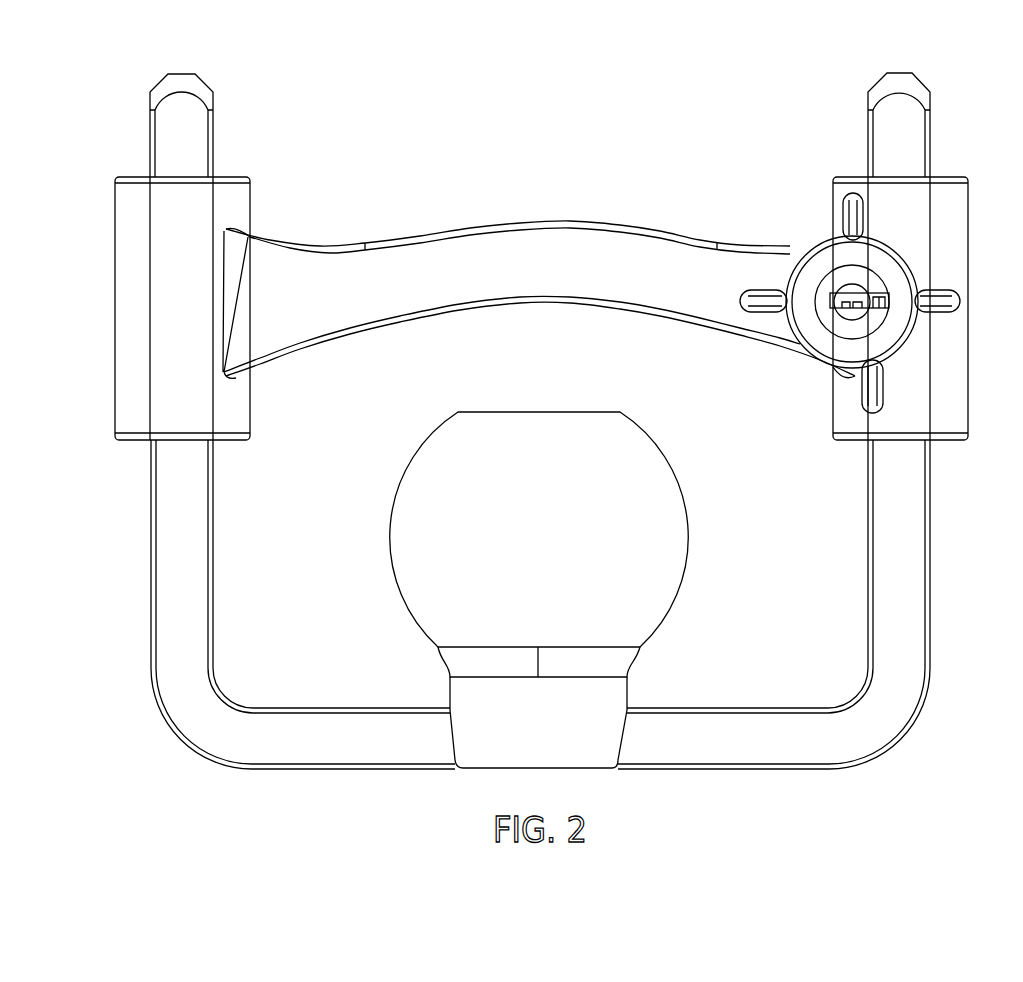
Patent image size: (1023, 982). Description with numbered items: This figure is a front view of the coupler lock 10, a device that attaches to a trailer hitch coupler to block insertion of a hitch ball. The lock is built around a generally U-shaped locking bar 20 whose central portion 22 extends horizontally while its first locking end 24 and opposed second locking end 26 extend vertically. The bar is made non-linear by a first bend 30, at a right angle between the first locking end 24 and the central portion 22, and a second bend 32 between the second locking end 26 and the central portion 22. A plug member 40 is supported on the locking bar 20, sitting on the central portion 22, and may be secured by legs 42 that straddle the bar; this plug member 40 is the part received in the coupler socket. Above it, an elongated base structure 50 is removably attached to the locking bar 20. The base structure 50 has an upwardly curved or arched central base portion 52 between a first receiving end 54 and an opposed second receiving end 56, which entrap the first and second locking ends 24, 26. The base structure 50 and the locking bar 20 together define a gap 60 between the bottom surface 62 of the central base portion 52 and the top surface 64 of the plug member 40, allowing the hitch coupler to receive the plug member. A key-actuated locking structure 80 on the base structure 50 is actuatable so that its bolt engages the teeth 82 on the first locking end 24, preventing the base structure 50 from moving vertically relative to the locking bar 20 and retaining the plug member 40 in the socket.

The coupler lock 10 is at (118, 115).
The locking bar 20 is at (149, 606).
The central portion 22 is at (725, 764).
The first locking end 24 is at (915, 87).
The second locking end 26 is at (200, 90).
The first bend 30 is at (888, 748).
The second bend 32 is at (194, 750).
The plug member 40 is at (382, 497).
The legs 42 is at (616, 747).
The base structure 50 is at (539, 261).
The central base portion 52 is at (577, 240).
The first receiving end 54 is at (968, 392).
The second receiving end 56 is at (115, 283).
The gap 60 is at (531, 359).
The bottom surface 62 is at (477, 311).
The top surface 64 is at (575, 410).
The locking structure 80 is at (843, 322).
The teeth 82 is at (868, 178).